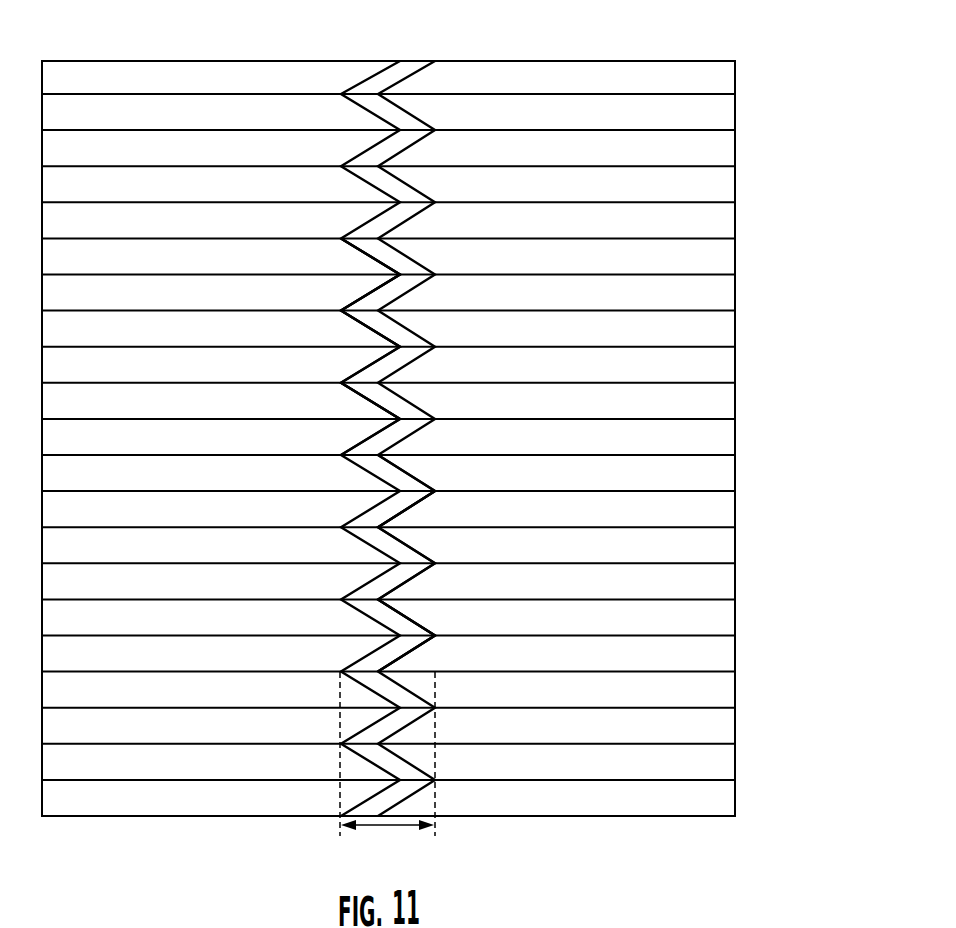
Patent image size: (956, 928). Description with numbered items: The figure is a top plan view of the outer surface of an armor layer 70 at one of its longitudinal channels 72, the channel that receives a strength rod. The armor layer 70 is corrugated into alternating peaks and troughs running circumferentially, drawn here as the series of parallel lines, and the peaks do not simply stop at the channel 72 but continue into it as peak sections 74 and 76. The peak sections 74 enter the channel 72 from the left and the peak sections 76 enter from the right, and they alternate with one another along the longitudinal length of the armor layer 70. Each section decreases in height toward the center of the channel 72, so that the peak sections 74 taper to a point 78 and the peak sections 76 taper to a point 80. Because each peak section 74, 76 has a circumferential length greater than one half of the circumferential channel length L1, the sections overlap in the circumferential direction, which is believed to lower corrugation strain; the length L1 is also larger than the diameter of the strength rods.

The armor layer 70 is at (804, 514).
The longitudinal channel 72 is at (405, 56).
The peak section 74 is at (363, 263).
The peak section 76 is at (417, 512).
The point 78 is at (395, 418).
The point 80 is at (380, 670).
The circumferential channel length L1 is at (390, 827).